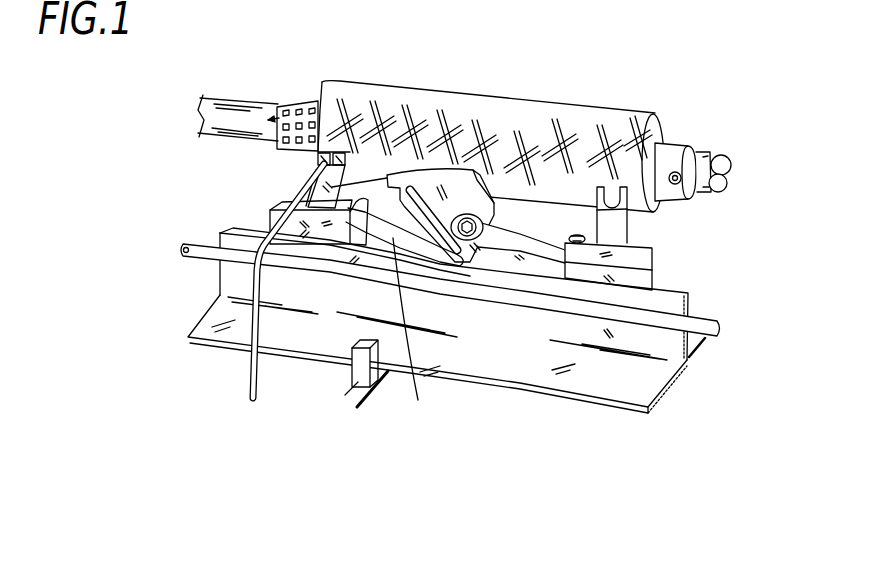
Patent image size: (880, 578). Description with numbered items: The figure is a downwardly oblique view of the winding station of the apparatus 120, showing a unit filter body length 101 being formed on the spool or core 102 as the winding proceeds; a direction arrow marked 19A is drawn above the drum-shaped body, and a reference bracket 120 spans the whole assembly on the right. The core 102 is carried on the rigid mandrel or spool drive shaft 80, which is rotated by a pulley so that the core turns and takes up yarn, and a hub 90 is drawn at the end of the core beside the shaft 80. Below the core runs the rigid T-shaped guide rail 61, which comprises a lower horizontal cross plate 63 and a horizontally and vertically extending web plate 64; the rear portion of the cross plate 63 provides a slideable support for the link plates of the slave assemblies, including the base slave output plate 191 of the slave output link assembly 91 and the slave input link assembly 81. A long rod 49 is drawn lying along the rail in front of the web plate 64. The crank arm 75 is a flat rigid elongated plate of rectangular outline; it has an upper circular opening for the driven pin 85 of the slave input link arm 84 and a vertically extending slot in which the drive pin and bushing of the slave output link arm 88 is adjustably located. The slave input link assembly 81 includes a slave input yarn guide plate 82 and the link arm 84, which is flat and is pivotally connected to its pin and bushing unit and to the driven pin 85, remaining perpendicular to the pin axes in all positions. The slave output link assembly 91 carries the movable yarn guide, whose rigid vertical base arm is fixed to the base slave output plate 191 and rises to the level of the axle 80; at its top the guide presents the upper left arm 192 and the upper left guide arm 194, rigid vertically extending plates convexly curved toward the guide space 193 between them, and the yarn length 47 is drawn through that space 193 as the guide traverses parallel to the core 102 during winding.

The roller assembly 19A is at (581, 100).
The yarn length 47 is at (257, 397).
The rod 49 is at (203, 246).
The T-shaped guide rail 61 is at (180, 273).
The lower horizontal cross plate 63 is at (236, 334).
The web plate 64 is at (236, 280).
The crank arm 75 is at (460, 178).
The mandrel or spool drive shaft 80 is at (707, 170).
The slave input link assembly 81 is at (637, 261).
The slave input yarn guide plate 82 is at (618, 234).
The slave input link arm 84 is at (541, 260).
The driven pin 85 is at (470, 219).
The slave output link arm 88 is at (381, 323).
The hub 90 is at (670, 153).
The slave output link assembly 91 is at (233, 160).
The unit filter body length 101 is at (358, 93).
The spool or core 102 is at (285, 104).
The apparatus 120 is at (765, 103).
The base slave output plate 191 is at (282, 210).
The upper left arm 192 is at (320, 163).
The guide space 193 is at (343, 150).
The upper left guide arm 194 is at (316, 100).